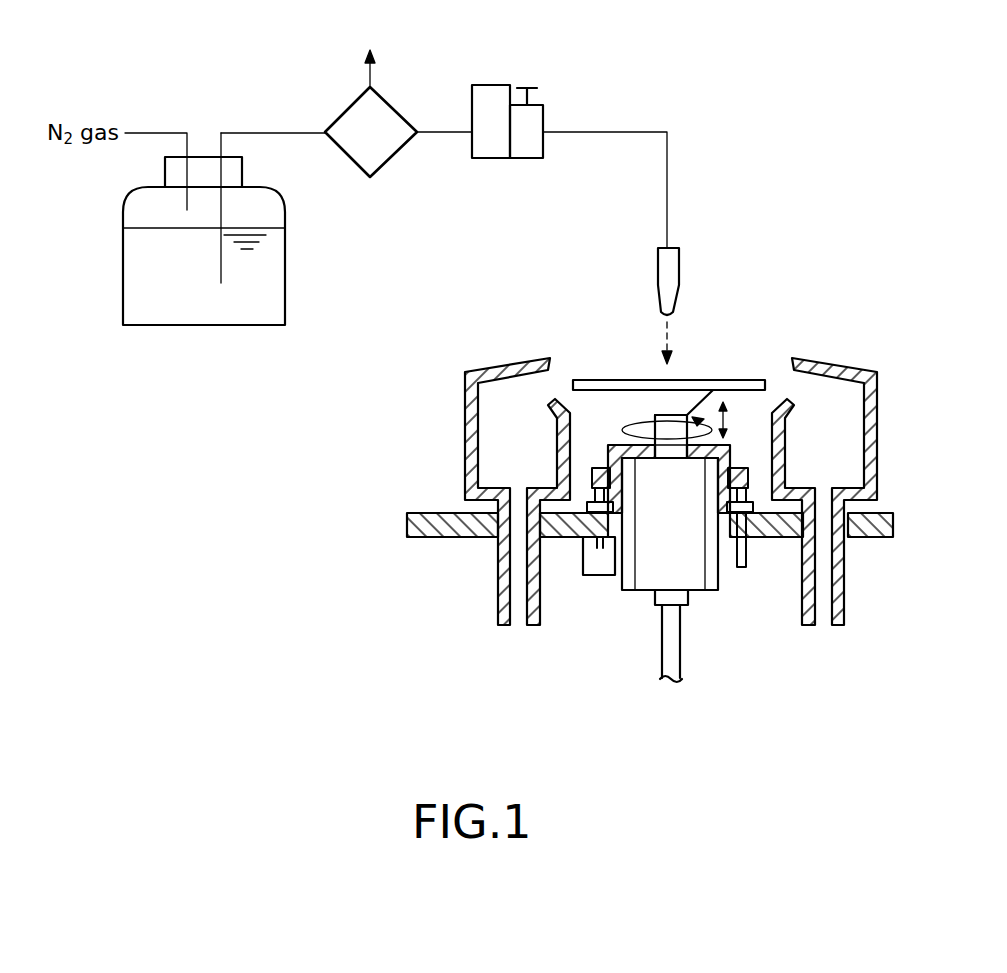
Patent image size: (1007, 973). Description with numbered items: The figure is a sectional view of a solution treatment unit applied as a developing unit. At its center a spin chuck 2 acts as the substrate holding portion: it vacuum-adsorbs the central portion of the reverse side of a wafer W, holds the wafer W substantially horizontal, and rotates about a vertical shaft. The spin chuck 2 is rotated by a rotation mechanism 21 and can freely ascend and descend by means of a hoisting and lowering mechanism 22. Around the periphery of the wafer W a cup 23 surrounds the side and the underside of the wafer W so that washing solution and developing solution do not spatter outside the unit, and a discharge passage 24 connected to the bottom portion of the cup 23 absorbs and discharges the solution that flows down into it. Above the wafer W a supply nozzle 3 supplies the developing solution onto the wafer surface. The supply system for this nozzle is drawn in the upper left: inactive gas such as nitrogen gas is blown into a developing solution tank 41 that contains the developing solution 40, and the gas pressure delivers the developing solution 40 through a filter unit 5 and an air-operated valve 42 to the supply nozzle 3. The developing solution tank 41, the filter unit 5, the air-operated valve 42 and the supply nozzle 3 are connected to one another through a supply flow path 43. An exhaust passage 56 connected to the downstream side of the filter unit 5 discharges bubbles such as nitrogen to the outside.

The spin chuck 2 is at (645, 404).
The supply nozzle 3 is at (681, 268).
The filter unit 5 is at (390, 161).
The rotation mechanism 21 is at (650, 577).
The hoisting and lowering mechanism 22 is at (597, 577).
The cup 23 is at (877, 390).
The discharge passage 24 is at (518, 587).
The developing solution 40 is at (145, 285).
The developing solution tank 41 is at (275, 278).
The air-operated valve 42 is at (547, 123).
The supply flow path 43 is at (287, 131).
The exhaust passage 56 is at (372, 83).
The wafer W is at (742, 378).